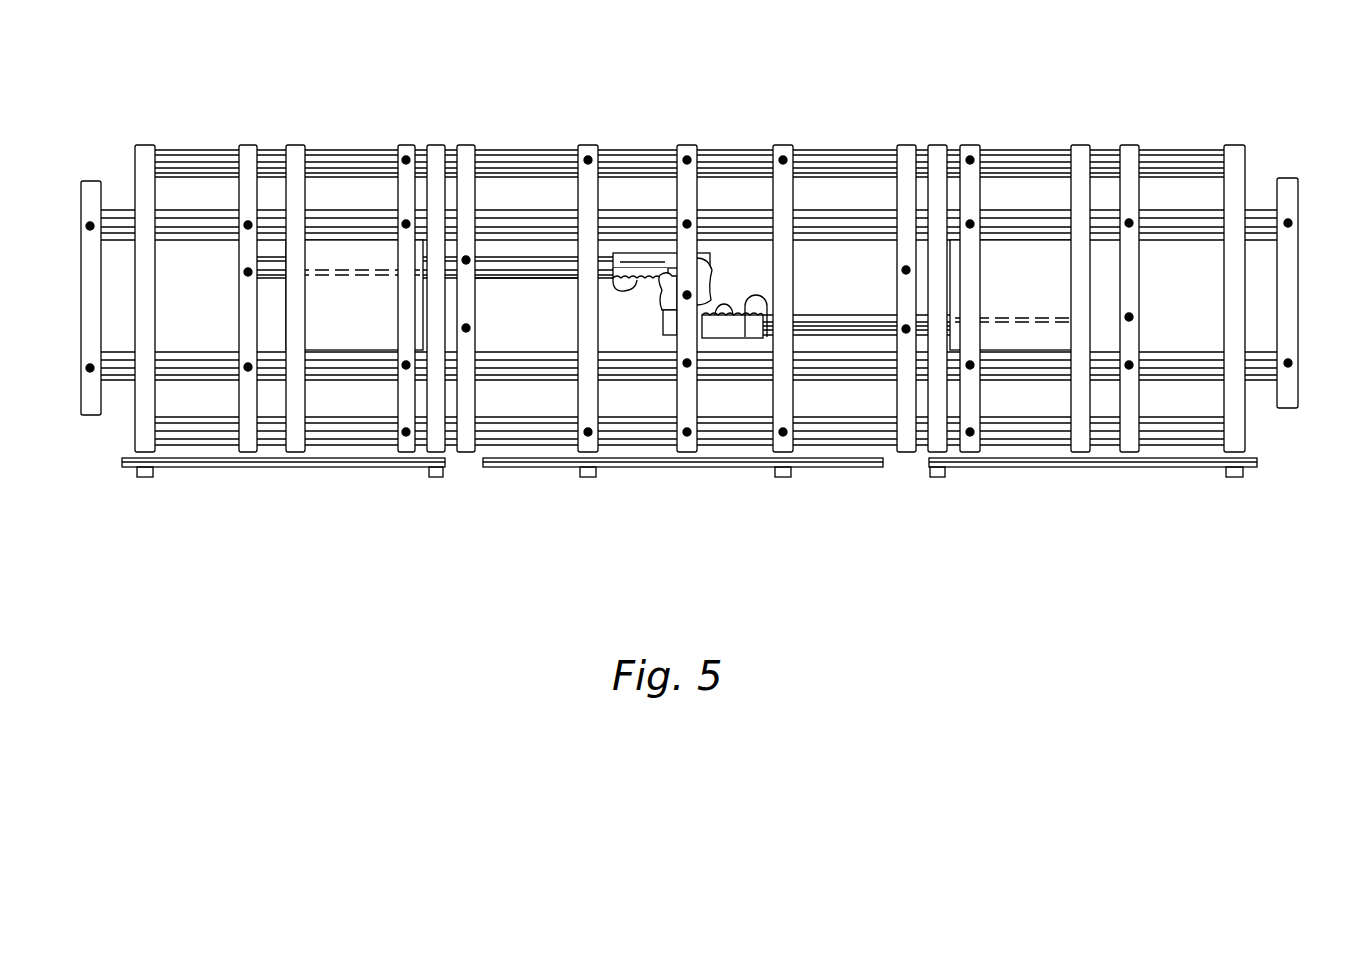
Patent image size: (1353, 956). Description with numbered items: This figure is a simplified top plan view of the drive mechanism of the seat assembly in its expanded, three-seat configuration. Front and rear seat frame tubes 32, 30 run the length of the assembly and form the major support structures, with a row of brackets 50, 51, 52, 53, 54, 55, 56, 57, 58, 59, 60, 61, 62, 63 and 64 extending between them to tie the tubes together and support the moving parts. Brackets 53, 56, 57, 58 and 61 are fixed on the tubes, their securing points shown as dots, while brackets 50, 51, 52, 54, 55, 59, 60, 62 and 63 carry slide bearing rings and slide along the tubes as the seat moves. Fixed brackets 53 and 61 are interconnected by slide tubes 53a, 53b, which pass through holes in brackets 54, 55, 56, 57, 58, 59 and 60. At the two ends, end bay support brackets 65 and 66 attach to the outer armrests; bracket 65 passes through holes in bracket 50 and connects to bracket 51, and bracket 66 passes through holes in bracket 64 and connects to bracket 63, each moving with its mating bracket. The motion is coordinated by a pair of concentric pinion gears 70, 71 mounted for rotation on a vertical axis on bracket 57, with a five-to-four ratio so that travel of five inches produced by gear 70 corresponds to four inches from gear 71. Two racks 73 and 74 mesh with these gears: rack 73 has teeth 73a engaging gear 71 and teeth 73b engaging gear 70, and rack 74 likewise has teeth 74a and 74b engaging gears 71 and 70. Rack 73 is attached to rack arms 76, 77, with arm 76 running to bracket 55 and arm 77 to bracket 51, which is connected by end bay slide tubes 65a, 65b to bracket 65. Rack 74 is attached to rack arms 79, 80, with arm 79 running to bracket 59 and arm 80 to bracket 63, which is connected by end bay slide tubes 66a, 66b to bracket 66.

The rear seat frame tube 30 is at (1017, 157).
The front seat frame tube 32 is at (1023, 428).
The bracket 50 is at (144, 143).
The bracket 51 is at (245, 143).
The bracket 52 is at (288, 143).
The bracket 53 is at (403, 143).
The slide tube 53a is at (717, 222).
The slide tube 53b is at (520, 358).
The bracket 54 is at (435, 143).
The bracket 55 is at (466, 143).
The bracket 56 is at (586, 143).
The bracket 57 is at (688, 143).
The bracket 58 is at (782, 143).
The bracket 59 is at (903, 143).
The bracket 60 is at (940, 143).
The bracket 61 is at (967, 143).
The bracket 62 is at (1080, 143).
The bracket 63 is at (1130, 143).
The bracket 64 is at (1235, 143).
The end bay support bracket 65 is at (93, 180).
The end bay slide tube 65a is at (187, 222).
The end bay slide tube 65b is at (195, 365).
The end bay support bracket 66 is at (1291, 183).
The end bay slide tube 66a is at (1182, 157).
The end bay slide tube 66b is at (1185, 360).
The pinion gear 70 is at (690, 311).
The pinion gear 71 is at (664, 315).
The rack 73 is at (650, 159).
The rack teeth 73a is at (613, 265).
The rack teeth 73b is at (637, 257).
The rack 74 is at (718, 438).
The rack teeth 74a is at (767, 337).
The rack teeth 74b is at (702, 338).
The rack arm 76 is at (510, 255).
The rack arm 77 is at (552, 268).
The rack arm 79 is at (818, 328).
The rack arm 80 is at (880, 315).